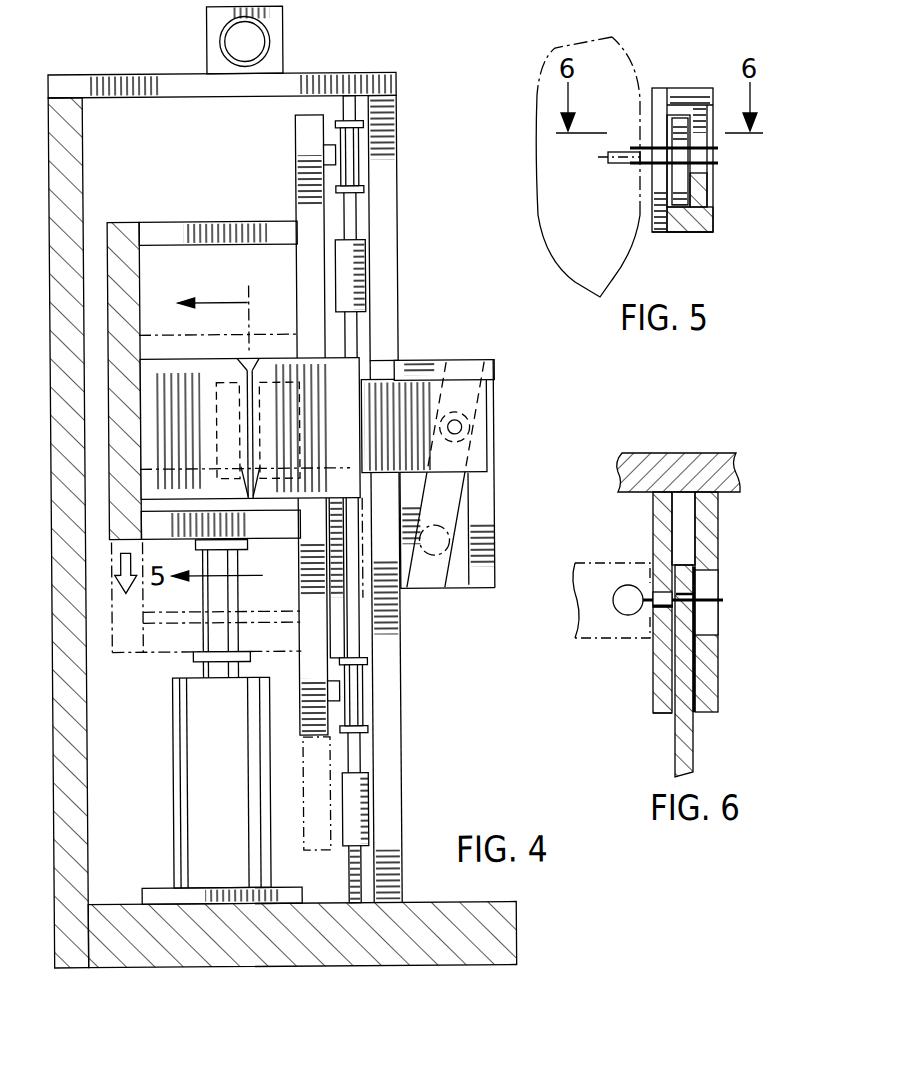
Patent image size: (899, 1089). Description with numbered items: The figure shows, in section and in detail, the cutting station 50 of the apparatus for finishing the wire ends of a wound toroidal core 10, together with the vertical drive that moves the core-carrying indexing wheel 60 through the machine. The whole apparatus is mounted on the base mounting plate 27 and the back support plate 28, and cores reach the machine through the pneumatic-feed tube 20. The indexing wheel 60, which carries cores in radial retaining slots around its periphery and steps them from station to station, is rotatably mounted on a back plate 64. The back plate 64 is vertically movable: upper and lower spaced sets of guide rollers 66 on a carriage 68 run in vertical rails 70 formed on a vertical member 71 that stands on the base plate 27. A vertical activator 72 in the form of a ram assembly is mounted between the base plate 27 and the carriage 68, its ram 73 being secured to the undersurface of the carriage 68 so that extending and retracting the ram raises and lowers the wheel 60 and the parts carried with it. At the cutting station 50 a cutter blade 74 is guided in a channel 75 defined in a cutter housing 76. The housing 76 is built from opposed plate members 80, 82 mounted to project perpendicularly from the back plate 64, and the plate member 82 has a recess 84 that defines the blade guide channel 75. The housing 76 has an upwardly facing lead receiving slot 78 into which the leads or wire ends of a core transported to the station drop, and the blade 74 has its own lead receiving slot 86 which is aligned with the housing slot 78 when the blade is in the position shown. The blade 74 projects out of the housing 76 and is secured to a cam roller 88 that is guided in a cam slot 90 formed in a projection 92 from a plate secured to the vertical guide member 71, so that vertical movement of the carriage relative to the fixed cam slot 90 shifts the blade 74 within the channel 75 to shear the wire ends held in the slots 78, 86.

In FIG. 5, the toroidal core 10 is at (610, 164).
In FIG. 6, the toroidal core 10 is at (625, 586).
In FIG. 4, the pneumatic-feed tube 20 is at (220, 42).
In FIG. 4, the base mounting plate 27 is at (511, 912).
In FIG. 4, the back support plate 28 is at (55, 536).
In FIG. 6, the back support plate 28 is at (672, 466).
In FIG. 4, the cutting station 50 is at (234, 349).
In FIG. 5, the indexing wheel 60 is at (636, 237).
In FIG. 6, the indexing wheel 60 is at (592, 643).
In FIG. 4, the back plate 64 is at (122, 228).
In FIG. 4, the guide rollers 66 is at (358, 149).
In FIG. 4, the carriage 68 is at (296, 195).
In FIG. 4, the vertical rails 70 is at (351, 645).
In FIG. 4, the vertical member 71 is at (391, 183).
In FIG. 4, the vertical activator 72 is at (183, 798).
In FIG. 4, the ram 73 is at (204, 643).
In FIG. 4, the cutter blade 74 is at (376, 388).
In FIG. 5, the cutter blade 74 is at (688, 194).
In FIG. 6, the cutter blade 74 is at (697, 623).
In FIG. 6, the channel 75 is at (684, 543).
In FIG. 4, the cutter housing 76 is at (366, 361).
In FIG. 5, the cutter housing 76 is at (699, 233).
In FIG. 6, the cutter housing 76 is at (661, 715).
In FIG. 4, the lead receiving slot 78 is at (249, 361).
In FIG. 6, the lead receiving slot 78 is at (657, 610).
In FIG. 5, the plate member 80 is at (657, 117).
In FIG. 6, the plate member 80 is at (660, 514).
In FIG. 5, the plate member 82 is at (707, 113).
In FIG. 6, the plate member 82 is at (709, 522).
In FIG. 5, the recess 84 is at (689, 120).
In FIG. 4, the lead receiving slot 86 is at (237, 420).
In FIG. 5, the lead receiving slot 86 is at (719, 164).
In FIG. 6, the lead receiving slot 86 is at (694, 596).
In FIG. 4, the cam roller 88 is at (466, 411).
In FIG. 4, the cam slot 90 is at (474, 361).
In FIG. 4, the projection 92 is at (477, 489).